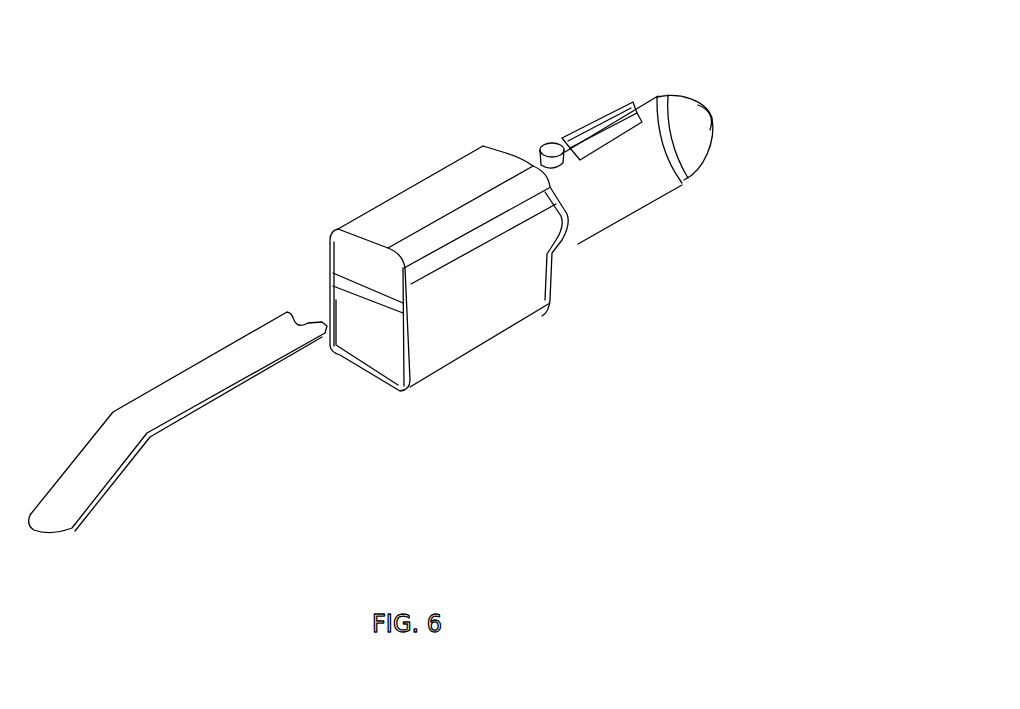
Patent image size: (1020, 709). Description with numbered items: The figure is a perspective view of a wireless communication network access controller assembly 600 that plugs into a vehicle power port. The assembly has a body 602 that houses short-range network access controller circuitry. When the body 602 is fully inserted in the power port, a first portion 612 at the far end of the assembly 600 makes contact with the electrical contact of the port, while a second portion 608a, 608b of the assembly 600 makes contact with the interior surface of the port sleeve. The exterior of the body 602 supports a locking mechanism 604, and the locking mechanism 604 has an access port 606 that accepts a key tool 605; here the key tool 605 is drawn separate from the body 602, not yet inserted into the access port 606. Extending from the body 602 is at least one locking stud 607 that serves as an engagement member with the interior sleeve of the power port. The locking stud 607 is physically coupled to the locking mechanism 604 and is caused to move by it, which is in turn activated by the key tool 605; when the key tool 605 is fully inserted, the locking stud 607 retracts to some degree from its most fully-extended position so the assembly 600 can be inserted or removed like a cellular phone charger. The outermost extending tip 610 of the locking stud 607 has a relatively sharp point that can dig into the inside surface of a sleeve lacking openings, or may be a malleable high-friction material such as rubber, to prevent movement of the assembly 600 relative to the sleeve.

The wireless communication network access controller assembly 600 is at (430, 277).
The body 602 is at (412, 215).
The locking mechanism 604 is at (327, 271).
The key tool 605 is at (183, 407).
The access port 606 is at (378, 300).
The locking stud 607 is at (537, 147).
The second portion 608a is at (593, 132).
The second portion 608b is at (580, 247).
The outermost extending tip 610 is at (553, 141).
The first portion 612 is at (713, 120).